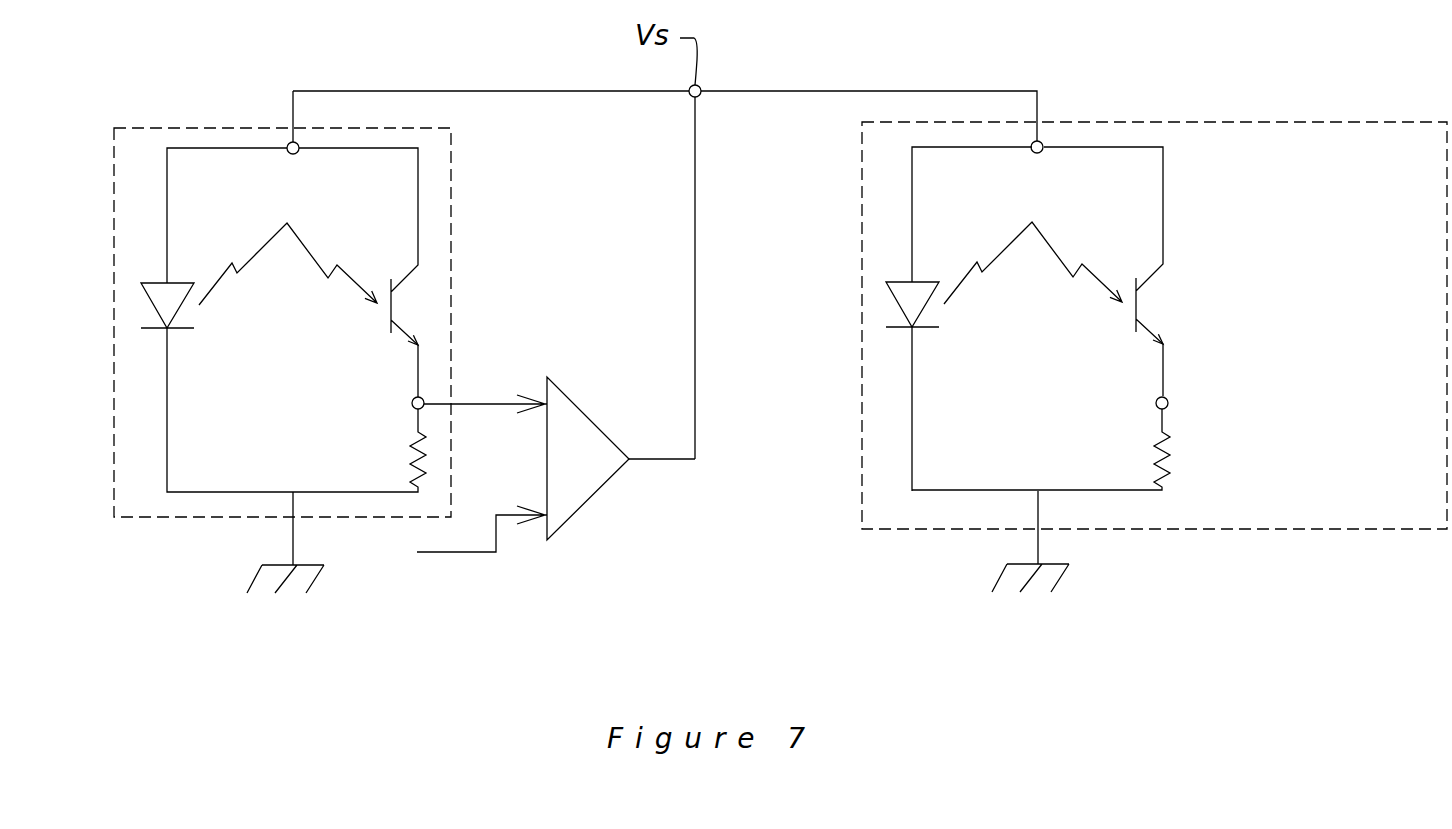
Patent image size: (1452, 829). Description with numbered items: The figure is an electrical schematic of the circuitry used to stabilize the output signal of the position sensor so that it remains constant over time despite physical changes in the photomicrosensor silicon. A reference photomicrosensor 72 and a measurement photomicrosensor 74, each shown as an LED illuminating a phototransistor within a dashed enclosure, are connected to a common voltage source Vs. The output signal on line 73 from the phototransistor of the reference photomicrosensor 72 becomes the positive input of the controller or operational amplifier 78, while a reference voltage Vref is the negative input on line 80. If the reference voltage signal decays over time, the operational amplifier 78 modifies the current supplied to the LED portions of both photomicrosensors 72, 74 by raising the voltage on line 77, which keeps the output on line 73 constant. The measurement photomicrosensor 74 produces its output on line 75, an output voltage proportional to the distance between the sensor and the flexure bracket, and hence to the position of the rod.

The reference photomicrosensor 72 is at (217, 517).
The output signal line 73 is at (475, 404).
The measurement photomicrosensor 74 is at (925, 530).
The second photomicrosensor output line 75 is at (1168, 403).
The LED current line 77 is at (662, 460).
The operational amplifier 78 is at (597, 480).
The reference voltage input line 80 is at (453, 553).